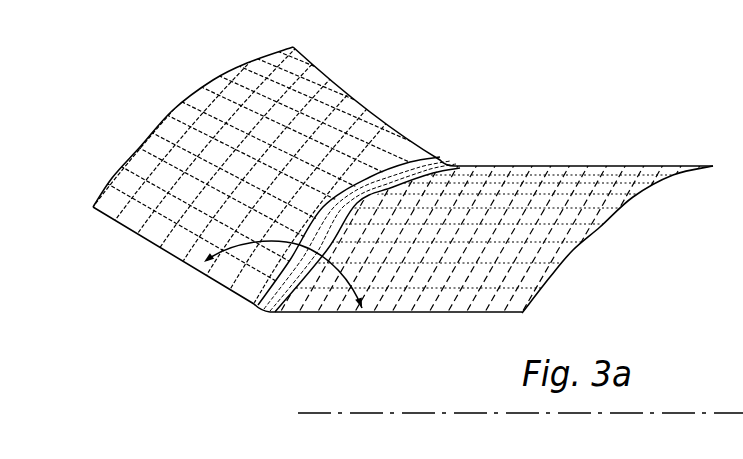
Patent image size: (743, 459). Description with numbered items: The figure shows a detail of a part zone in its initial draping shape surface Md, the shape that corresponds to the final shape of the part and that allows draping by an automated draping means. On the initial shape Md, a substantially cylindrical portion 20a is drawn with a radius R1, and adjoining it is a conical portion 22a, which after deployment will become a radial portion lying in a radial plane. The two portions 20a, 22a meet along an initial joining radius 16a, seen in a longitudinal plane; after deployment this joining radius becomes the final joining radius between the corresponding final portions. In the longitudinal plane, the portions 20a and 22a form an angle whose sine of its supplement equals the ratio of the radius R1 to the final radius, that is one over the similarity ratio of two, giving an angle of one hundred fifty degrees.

The conical portion 22a is at (147, 233).
The initial joining radius 16a is at (263, 315).
The substantially cylindrical portion 20a is at (415, 313).
The initial draping shape surface Md is at (535, 119).
The radius R1 is at (577, 256).